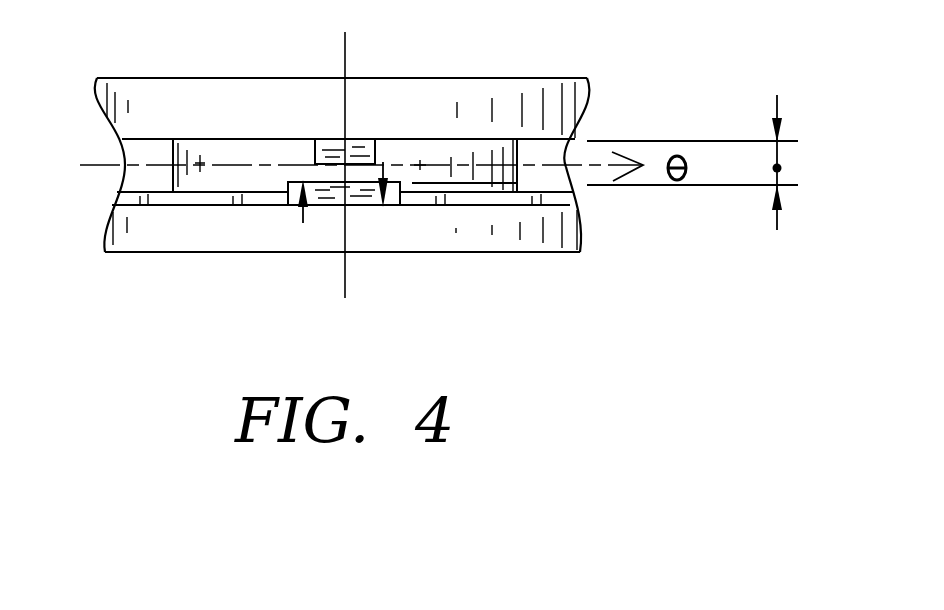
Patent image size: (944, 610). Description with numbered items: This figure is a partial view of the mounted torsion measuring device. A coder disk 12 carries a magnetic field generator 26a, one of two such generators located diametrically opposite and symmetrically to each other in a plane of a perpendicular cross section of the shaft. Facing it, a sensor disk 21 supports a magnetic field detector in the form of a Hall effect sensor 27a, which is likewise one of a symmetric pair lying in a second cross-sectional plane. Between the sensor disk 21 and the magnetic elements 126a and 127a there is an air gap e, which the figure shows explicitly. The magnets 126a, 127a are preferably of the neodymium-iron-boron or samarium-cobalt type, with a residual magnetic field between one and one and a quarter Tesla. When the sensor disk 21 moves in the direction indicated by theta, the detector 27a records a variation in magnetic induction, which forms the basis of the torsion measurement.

The sensor disk 21 is at (382, 93).
The coder disk 12 is at (173, 230).
The Hall effect sensor 27a is at (330, 139).
The magnetic field generator 26a is at (384, 232).
The magnetic element 127a is at (297, 205).
The magnetic element 126a is at (389, 204).
The air gap e is at (777, 168).